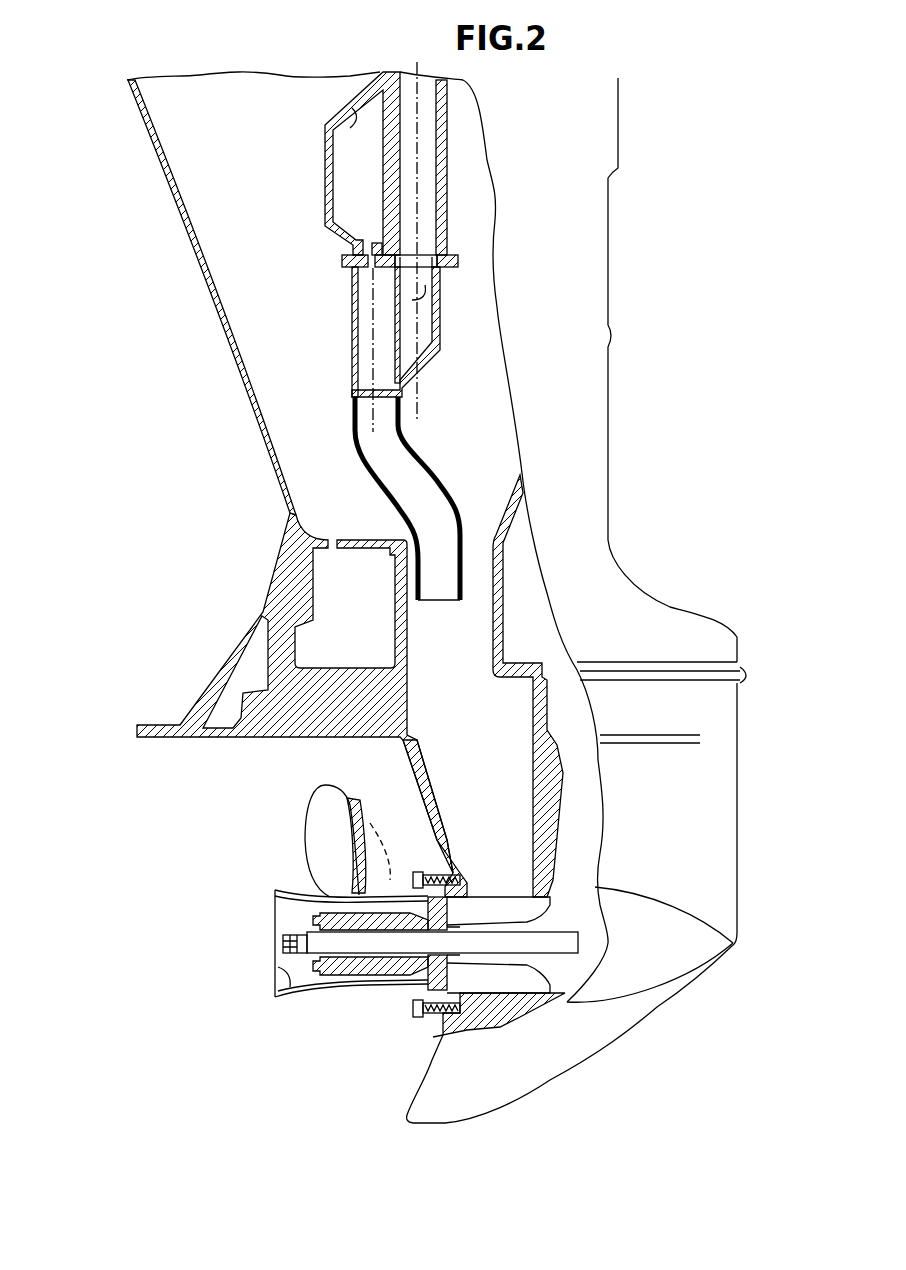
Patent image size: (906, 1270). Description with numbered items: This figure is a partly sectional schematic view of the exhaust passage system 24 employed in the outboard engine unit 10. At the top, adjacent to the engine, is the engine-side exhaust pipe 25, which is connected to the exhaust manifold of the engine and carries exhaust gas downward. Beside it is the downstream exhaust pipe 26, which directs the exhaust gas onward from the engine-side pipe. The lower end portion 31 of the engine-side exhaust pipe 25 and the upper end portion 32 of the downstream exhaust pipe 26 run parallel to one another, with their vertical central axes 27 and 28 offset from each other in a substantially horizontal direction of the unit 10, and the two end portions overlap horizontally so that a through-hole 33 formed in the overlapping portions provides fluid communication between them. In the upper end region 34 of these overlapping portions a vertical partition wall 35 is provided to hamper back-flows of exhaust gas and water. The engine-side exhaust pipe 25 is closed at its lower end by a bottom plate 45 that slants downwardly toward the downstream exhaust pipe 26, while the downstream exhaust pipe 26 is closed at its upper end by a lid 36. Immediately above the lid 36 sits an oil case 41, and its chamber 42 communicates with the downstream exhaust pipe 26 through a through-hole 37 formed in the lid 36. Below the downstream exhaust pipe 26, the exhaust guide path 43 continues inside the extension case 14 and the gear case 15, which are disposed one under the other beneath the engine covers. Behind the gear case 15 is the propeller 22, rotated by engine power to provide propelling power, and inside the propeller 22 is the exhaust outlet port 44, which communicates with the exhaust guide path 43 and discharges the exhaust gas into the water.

The outboard engine unit 10 is at (636, 103).
The extension case 14 is at (608, 505).
The gear case 15 is at (738, 795).
The propeller 22 is at (305, 840).
The exhaust passage system 24 is at (306, 498).
The engine-side exhaust pipe 25 is at (408, 305).
The downstream exhaust pipe 26 is at (350, 392).
The vertical central axis 27 is at (422, 203).
The vertical central axis 28 is at (353, 338).
The lower end portion 31 is at (446, 340).
The upper end portion 32 is at (345, 307).
The through-hole 33 is at (440, 313).
The upper end region 34 is at (385, 290).
The vertical partition wall 35 is at (400, 271).
The lid 36 is at (330, 233).
The through-hole 37 is at (350, 282).
The oil case 41 is at (325, 172).
The chamber 42 is at (350, 128).
The exhaust guide path 43 is at (405, 756).
The exhaust outlet port 44 is at (278, 968).
The bottom plate 45 is at (422, 373).